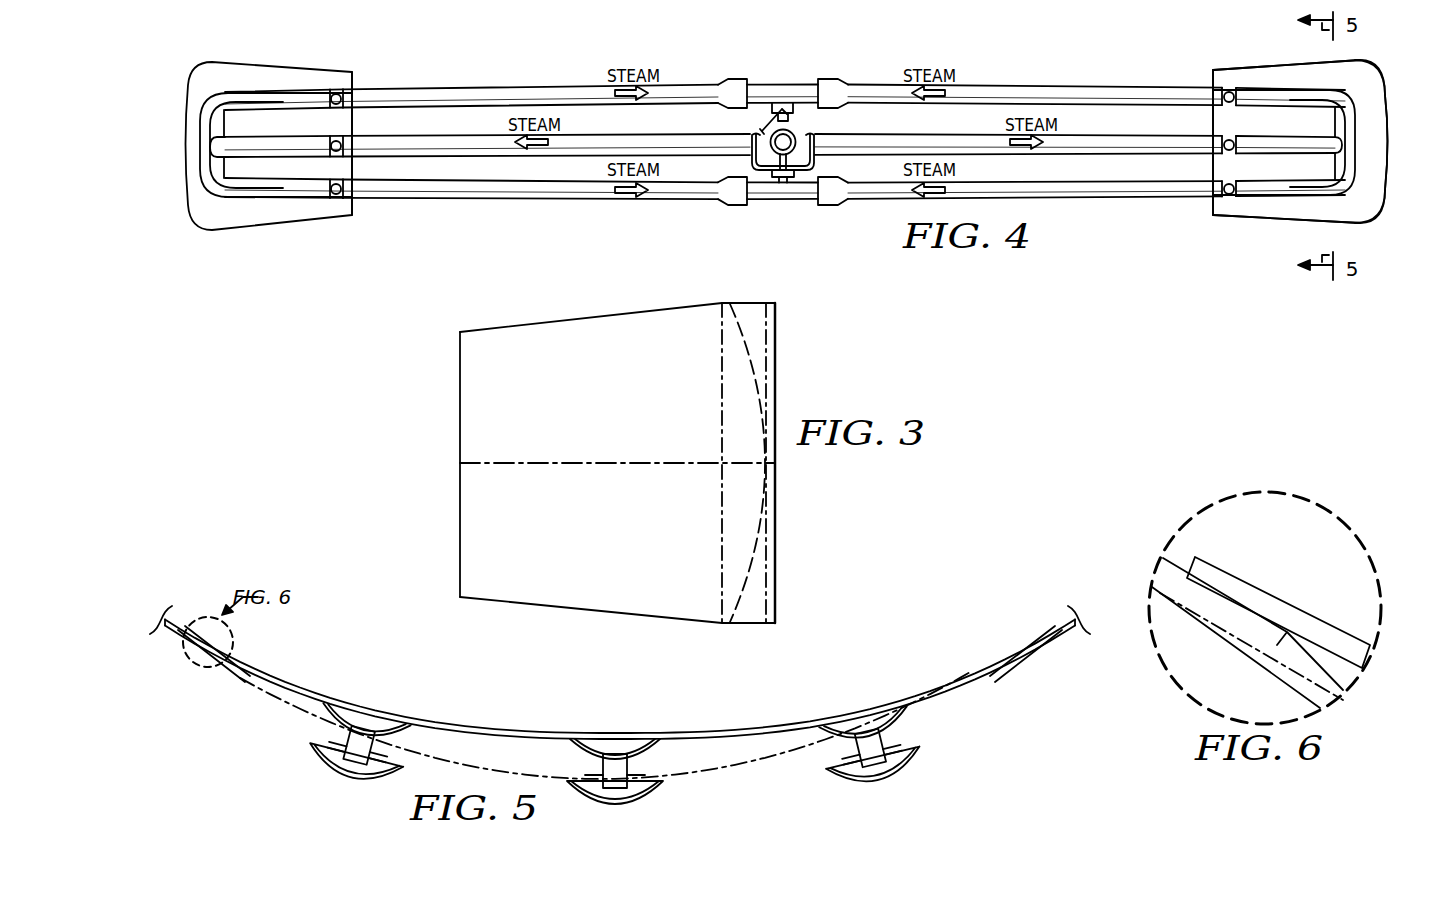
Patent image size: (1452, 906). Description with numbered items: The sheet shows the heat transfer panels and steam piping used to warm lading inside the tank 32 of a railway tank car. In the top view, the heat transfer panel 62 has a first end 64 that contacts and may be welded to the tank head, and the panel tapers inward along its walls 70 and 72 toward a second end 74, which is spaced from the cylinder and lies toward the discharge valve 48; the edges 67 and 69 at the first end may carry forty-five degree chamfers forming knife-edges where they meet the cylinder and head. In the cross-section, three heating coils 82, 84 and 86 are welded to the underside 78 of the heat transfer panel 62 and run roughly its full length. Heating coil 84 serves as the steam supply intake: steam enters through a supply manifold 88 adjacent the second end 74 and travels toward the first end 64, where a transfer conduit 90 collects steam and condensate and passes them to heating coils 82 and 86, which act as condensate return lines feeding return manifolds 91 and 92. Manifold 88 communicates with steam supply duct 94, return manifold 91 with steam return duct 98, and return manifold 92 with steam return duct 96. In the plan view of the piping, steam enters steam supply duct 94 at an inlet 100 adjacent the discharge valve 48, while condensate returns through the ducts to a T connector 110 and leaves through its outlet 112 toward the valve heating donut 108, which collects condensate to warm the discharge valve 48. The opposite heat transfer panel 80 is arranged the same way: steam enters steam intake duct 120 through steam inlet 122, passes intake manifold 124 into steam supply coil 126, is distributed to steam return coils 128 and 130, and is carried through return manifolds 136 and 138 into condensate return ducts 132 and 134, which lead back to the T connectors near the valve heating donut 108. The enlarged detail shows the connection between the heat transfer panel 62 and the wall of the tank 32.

In FIG. 6, the tank 32 is at (1250, 657).
In FIG. 4, the discharge valve 48 is at (792, 130).
In FIG. 4, the heat transfer panel 62 is at (1380, 85).
In FIG. 6, the heat transfer panel 62 is at (1278, 603).
In FIG. 4, the first end 64 is at (1385, 160).
In FIG. 3, the first end 64 is at (776, 365).
In FIG. 4, the edge 67 is at (1368, 225).
In FIG. 3, the edge 67 is at (748, 624).
In FIG. 4, the edge 69 is at (1370, 60).
In FIG. 3, the edge 69 is at (740, 308).
In FIG. 4, the wall 70 is at (1258, 62).
In FIG. 3, the wall 70 is at (592, 325).
In FIG. 4, the wall 72 is at (1256, 218).
In FIG. 3, the wall 72 is at (592, 613).
In FIG. 4, the second end 74 is at (1213, 75).
In FIG. 3, the second end 74 is at (460, 397).
In FIG. 5, the underside 78 is at (710, 766).
In FIG. 4, the heat transfer panel 80 is at (212, 66).
In FIG. 4, the heating coil 82 is at (1290, 192).
In FIG. 5, the heating coil 82 is at (370, 714).
In FIG. 4, the heating coil 84 is at (1325, 143).
In FIG. 5, the heating coil 84 is at (615, 752).
In FIG. 4, the heating coil 86 is at (1285, 92).
In FIG. 5, the heating coil 86 is at (860, 716).
In FIG. 4, the supply manifold 88 is at (1229, 150).
In FIG. 5, the supply manifold 88 is at (600, 770).
In FIG. 4, the transfer conduit 90 is at (1362, 120).
In FIG. 4, the return manifold 91 is at (1229, 194).
In FIG. 5, the return manifold 91 is at (362, 745).
In FIG. 4, the return manifold 92 is at (1229, 92).
In FIG. 5, the return manifold 92 is at (866, 748).
In FIG. 4, the steam supply duct 94 is at (965, 130).
In FIG. 5, the steam supply duct 94 is at (617, 802).
In FIG. 4, the steam return duct 96 is at (1096, 92).
In FIG. 5, the steam return duct 96 is at (842, 768).
In FIG. 4, the steam return duct 98 is at (1124, 192).
In FIG. 5, the steam return duct 98 is at (392, 762).
In FIG. 4, the inlet 100 is at (815, 140).
In FIG. 4, the valve heating donut 108 is at (765, 128).
In FIG. 4, the T connector 110 is at (810, 190).
In FIG. 4, the outlet 112 is at (782, 182).
In FIG. 4, the steam intake duct 120 is at (578, 135).
In FIG. 4, the steam inlet 122 is at (752, 140).
In FIG. 4, the intake manifold 124 is at (343, 130).
In FIG. 4, the steam supply coil 126 is at (240, 148).
In FIG. 4, the steam return coil 128 is at (277, 195).
In FIG. 4, the steam return coil 130 is at (275, 93).
In FIG. 4, the condensate return duct 132 is at (548, 195).
In FIG. 4, the condensate return duct 134 is at (500, 93).
In FIG. 4, the return manifold 136 is at (336, 194).
In FIG. 4, the return manifold 138 is at (336, 94).